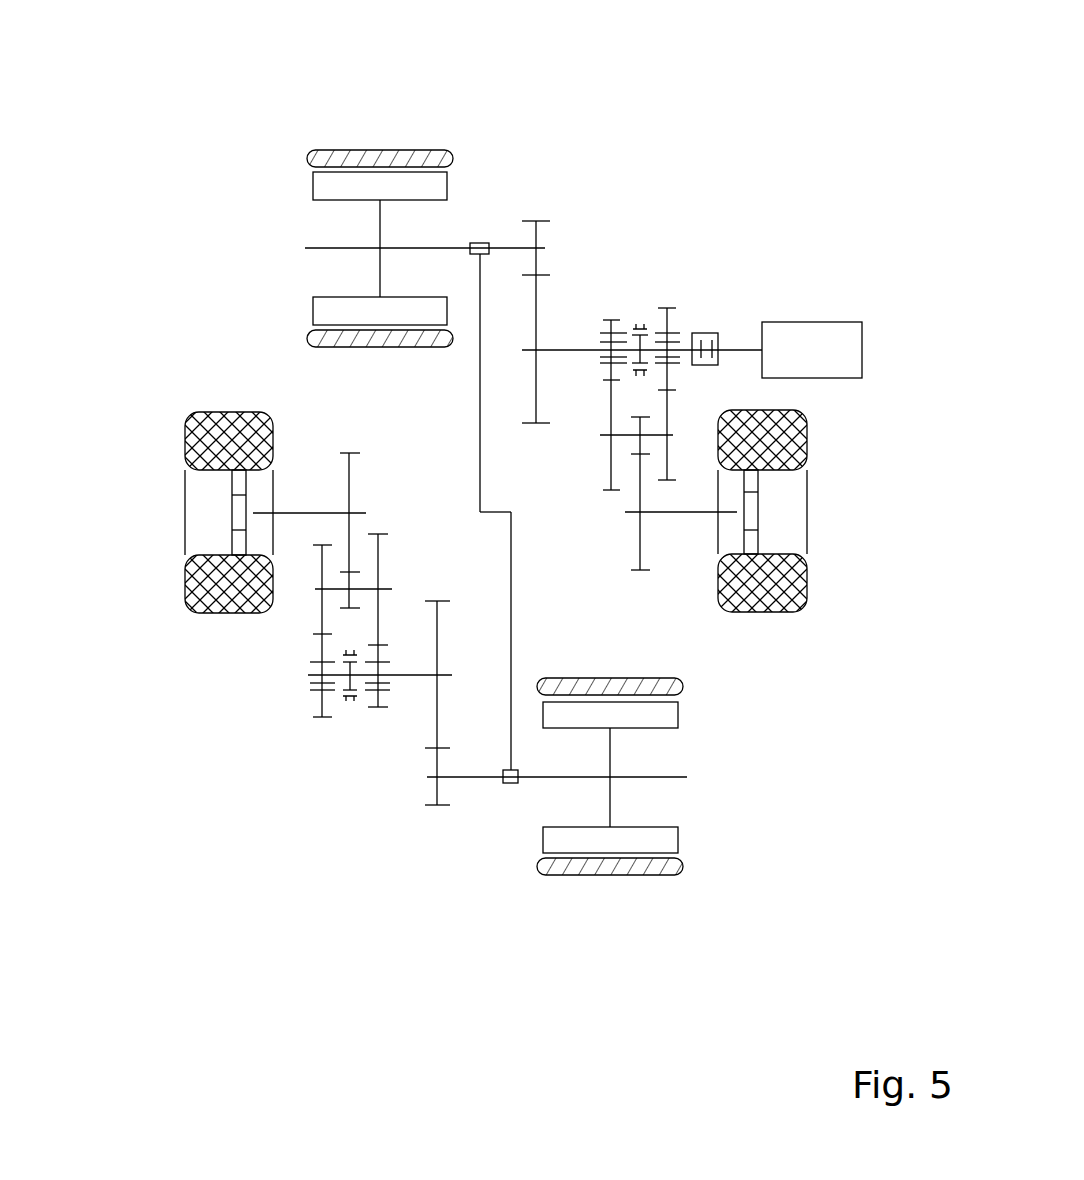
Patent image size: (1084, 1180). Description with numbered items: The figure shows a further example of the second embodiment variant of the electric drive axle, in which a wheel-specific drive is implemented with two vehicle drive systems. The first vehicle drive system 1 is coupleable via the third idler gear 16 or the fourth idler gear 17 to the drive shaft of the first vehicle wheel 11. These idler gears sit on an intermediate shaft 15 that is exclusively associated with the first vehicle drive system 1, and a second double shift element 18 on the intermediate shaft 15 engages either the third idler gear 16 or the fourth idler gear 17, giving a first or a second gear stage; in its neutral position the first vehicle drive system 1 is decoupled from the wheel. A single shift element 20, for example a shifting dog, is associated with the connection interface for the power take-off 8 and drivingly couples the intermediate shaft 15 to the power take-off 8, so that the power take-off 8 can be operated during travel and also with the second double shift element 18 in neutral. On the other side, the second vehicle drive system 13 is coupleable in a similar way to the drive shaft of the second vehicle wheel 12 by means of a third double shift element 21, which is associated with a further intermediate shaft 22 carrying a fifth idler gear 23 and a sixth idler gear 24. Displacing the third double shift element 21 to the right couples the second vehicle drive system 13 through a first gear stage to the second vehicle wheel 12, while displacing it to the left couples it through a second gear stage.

The first vehicle drive system 1 is at (327, 232).
The power take-off (PTO) 8 is at (724, 342).
The first vehicle wheel 11 is at (770, 590).
The second vehicle wheel 12 is at (193, 597).
The second vehicle drive system 13 is at (662, 837).
The intermediate shaft 15 is at (578, 350).
The third idler gear 16 is at (609, 318).
The fourth idler gear 17 is at (667, 306).
The second double shift element 18 is at (641, 320).
The single shift element 20 is at (708, 329).
The third double shift element 21 is at (350, 704).
The intermediate shaft 22 is at (400, 677).
The fifth idler gear 23 is at (378, 710).
The sixth idler gear 24 is at (315, 722).